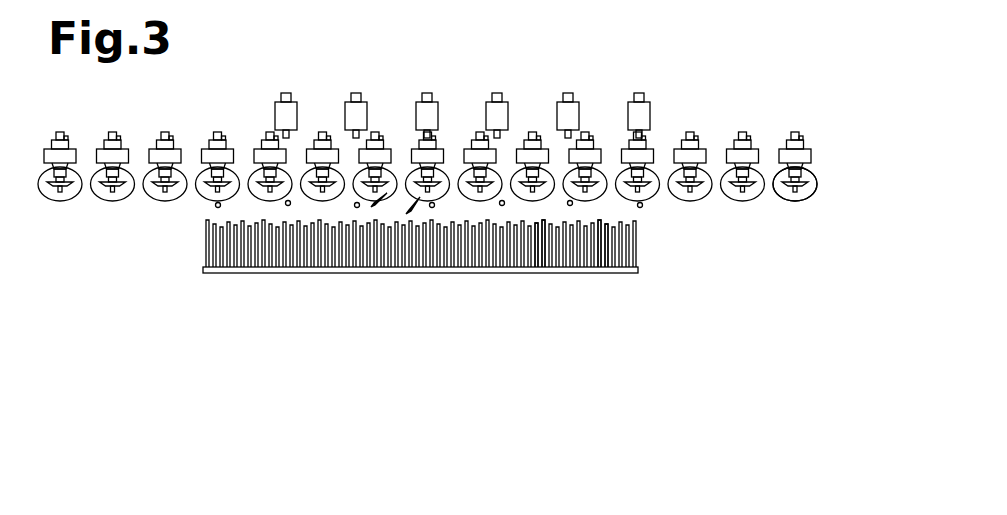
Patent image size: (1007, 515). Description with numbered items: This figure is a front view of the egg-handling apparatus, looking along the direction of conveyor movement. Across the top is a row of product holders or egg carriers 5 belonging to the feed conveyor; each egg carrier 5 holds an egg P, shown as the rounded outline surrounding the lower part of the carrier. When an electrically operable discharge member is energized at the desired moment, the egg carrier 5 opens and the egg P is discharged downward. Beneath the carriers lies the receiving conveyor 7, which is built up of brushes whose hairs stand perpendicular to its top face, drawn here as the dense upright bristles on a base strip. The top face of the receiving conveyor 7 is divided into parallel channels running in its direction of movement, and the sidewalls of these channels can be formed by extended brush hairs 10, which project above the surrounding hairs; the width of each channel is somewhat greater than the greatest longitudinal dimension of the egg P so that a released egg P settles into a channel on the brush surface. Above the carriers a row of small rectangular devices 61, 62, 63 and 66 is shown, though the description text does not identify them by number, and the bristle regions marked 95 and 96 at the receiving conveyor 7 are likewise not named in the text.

The egg carrier 5 is at (805, 150).
The egg P is at (813, 187).
The detector 61 is at (293, 113).
The detector 62 is at (360, 107).
The detector 63 is at (433, 110).
The detector 66 is at (643, 108).
The receiving conveyor 7 is at (377, 279).
The extended brush hairs 10 is at (207, 240).
The bristle 95 is at (542, 232).
The bristle 96 is at (603, 223).